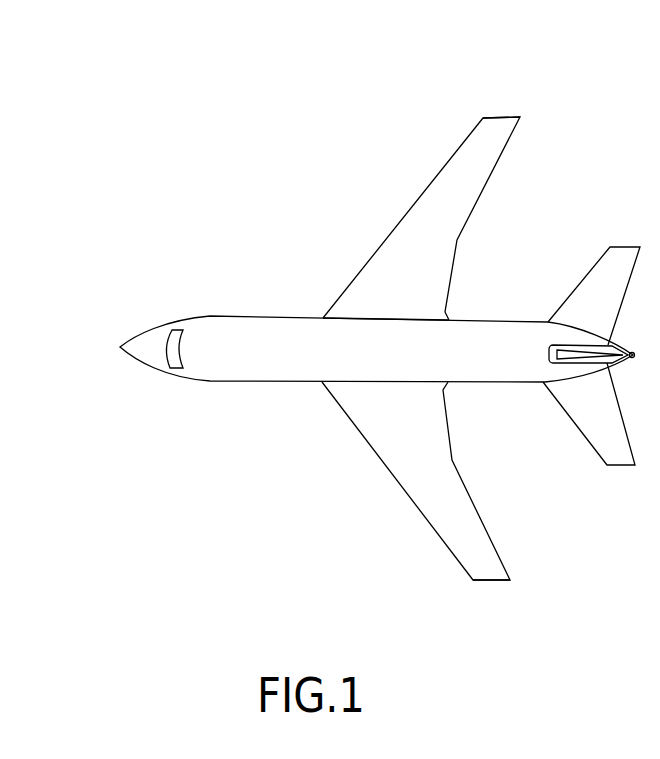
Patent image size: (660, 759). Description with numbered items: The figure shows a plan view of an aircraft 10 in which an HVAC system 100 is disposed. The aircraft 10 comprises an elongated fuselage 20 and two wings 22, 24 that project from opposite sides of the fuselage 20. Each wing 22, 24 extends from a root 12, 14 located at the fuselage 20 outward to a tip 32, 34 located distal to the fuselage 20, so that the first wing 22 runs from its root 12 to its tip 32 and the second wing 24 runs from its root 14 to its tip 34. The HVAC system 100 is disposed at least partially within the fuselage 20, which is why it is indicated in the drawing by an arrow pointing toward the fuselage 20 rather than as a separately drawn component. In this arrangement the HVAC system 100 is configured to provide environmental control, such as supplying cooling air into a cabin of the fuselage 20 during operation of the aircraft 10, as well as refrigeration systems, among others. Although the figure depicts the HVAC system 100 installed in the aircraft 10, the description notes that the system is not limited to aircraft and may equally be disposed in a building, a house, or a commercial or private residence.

The aircraft 10 is at (182, 160).
The HVAC system 100 is at (203, 292).
The root 12 is at (357, 382).
The root 14 is at (383, 318).
The fuselage 20 is at (281, 371).
The wing 22 is at (420, 456).
The wing 24 is at (426, 267).
The tip 32 is at (493, 582).
The tip 34 is at (497, 117).